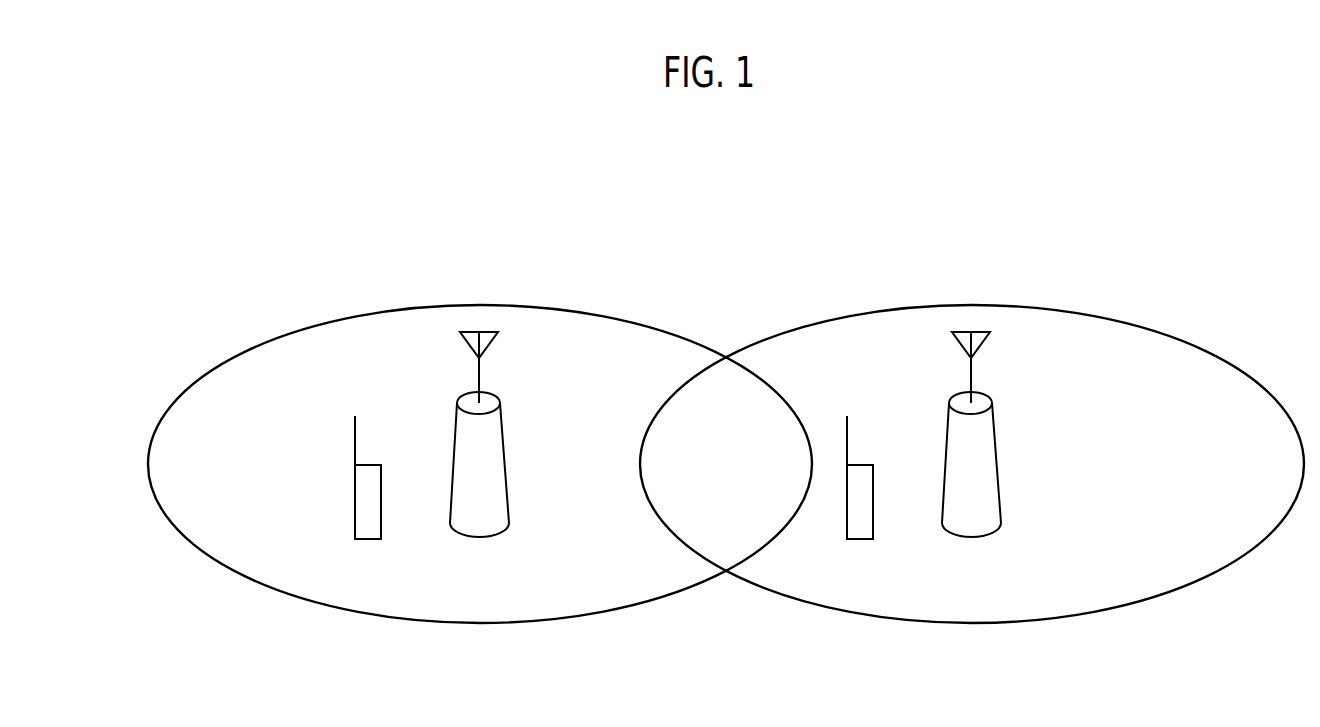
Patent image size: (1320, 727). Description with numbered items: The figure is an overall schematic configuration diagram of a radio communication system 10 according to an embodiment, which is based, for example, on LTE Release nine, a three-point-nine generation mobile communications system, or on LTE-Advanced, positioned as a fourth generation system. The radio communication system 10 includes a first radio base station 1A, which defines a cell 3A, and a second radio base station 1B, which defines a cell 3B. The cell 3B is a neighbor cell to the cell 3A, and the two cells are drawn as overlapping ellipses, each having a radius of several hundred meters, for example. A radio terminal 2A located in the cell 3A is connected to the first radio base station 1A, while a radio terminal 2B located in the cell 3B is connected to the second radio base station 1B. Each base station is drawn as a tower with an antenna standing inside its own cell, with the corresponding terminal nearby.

The radio communication system 10 is at (1066, 159).
The first radio base station 1A is at (493, 463).
The second radio base station 1B is at (985, 463).
The radio terminal 2A is at (373, 513).
The radio terminal 2B is at (865, 513).
The cell 3A is at (484, 305).
The cell 3B is at (976, 305).